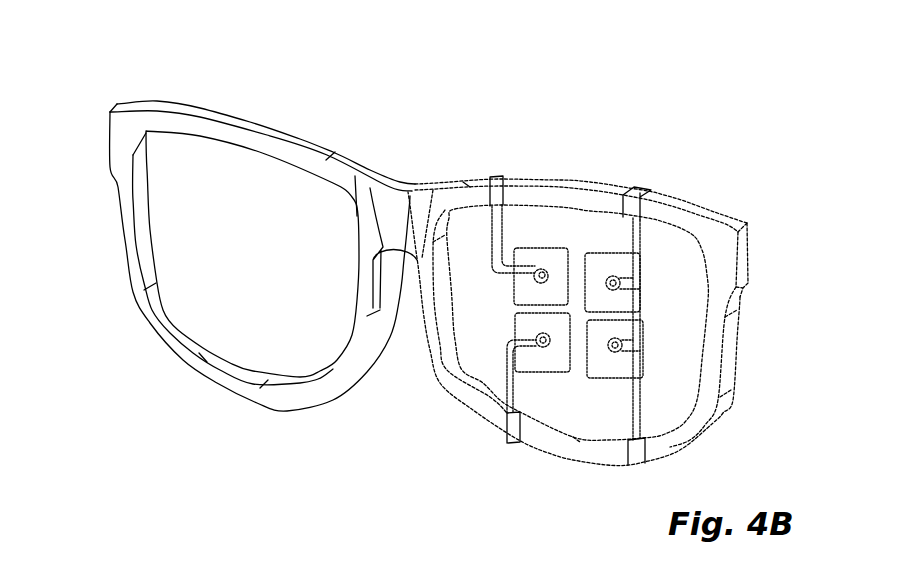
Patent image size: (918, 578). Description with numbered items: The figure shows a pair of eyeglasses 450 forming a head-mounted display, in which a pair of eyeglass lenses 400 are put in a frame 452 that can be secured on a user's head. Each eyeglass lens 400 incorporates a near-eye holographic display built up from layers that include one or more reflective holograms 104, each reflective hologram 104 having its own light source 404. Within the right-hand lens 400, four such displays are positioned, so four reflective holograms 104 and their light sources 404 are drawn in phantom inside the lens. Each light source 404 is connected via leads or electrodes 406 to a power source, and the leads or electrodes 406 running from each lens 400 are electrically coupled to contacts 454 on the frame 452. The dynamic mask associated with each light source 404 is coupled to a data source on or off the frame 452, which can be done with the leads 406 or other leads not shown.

The eyeglass lens 400 is at (227, 315).
The pair of eyeglasses 450 is at (634, 74).
The frame 452 is at (393, 198).
The contacts 454 is at (628, 198).
The leads or electrodes 406 is at (637, 248).
The light source 404 is at (608, 279).
The reflective hologram 104 is at (632, 300).